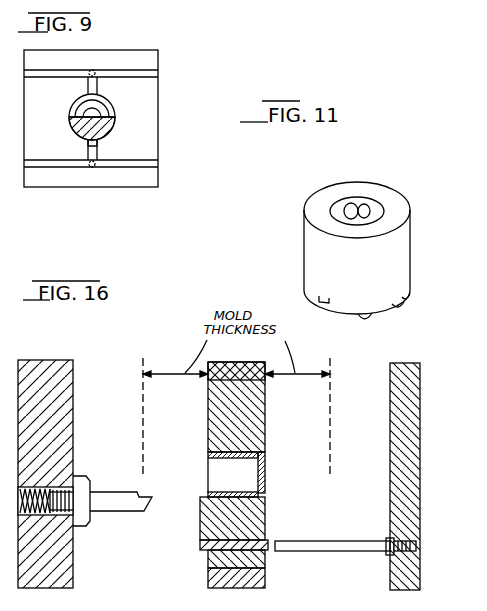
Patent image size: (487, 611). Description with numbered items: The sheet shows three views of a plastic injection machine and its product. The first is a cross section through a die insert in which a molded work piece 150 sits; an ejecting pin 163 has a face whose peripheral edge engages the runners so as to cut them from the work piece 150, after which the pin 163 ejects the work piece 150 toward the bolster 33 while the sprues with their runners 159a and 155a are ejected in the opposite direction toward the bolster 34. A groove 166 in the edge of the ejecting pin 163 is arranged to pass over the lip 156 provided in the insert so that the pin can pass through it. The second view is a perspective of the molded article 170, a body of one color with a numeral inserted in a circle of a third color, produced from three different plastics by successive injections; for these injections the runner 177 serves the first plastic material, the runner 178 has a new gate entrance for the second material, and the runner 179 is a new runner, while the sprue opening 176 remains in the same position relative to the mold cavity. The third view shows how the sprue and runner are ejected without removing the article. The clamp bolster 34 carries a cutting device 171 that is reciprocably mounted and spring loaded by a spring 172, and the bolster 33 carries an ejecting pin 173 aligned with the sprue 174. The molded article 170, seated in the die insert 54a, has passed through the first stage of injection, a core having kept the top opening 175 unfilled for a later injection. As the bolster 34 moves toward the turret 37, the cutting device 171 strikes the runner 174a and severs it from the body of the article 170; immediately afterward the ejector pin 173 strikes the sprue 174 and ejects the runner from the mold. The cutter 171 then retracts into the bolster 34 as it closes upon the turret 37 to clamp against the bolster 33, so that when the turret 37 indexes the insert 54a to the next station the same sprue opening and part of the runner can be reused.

In FIG. 9, the runner 159a is at (88, 87).
In FIG. 9, the runner 155a is at (92, 143).
In FIG. 9, the work piece 150 is at (105, 108).
In FIG. 9, the ejecting pin 163 is at (110, 125).
In FIG. 9, the groove 166 is at (97, 142).
In FIG. 11, the molded article 170 is at (405, 258).
In FIG. 16, the molded article 170 is at (246, 493).
In FIG. 11, the runner 177 is at (366, 322).
In FIG. 11, the runner 178 is at (398, 309).
In FIG. 11, the runner 179 is at (409, 298).
In FIG. 16, the clamping bolster 34 is at (73, 383).
In FIG. 16, the bolster 33 is at (420, 383).
In FIG. 16, the spring 172 is at (76, 471).
In FIG. 16, the cutting device 171 is at (118, 490).
In FIG. 16, the die insert 54a is at (258, 403).
In FIG. 16, the lip 156 is at (208, 455).
In FIG. 16, the top opening 175 is at (262, 475).
In FIG. 16, the runner 174a is at (200, 517).
In FIG. 16, the sprue opening 176 is at (260, 540).
In FIG. 16, the sprue 174 is at (208, 557).
In FIG. 16, the turret 37 is at (234, 588).
In FIG. 16, the ejecting pin 173 is at (328, 552).